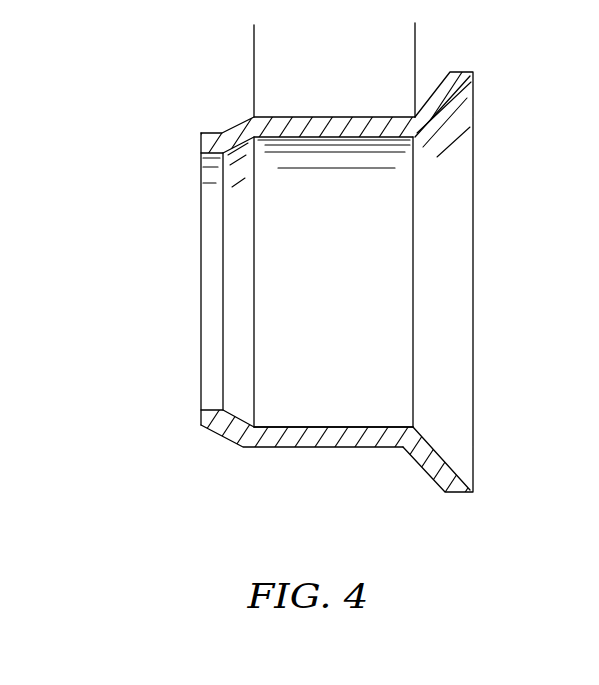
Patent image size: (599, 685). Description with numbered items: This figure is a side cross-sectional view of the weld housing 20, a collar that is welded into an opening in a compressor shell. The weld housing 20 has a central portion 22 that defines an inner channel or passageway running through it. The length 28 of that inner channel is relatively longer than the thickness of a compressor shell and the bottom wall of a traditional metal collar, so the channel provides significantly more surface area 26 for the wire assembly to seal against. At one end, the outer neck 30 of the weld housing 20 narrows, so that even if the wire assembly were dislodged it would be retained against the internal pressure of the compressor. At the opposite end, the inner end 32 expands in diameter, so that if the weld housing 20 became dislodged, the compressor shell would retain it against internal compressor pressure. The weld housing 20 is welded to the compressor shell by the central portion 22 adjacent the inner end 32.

The weld housing 20 is at (131, 84).
The central portion 22 is at (317, 447).
The surface area 26 is at (345, 427).
The length 28 is at (258, 33).
The outer neck 30 is at (203, 430).
The inner end 32 is at (437, 483).